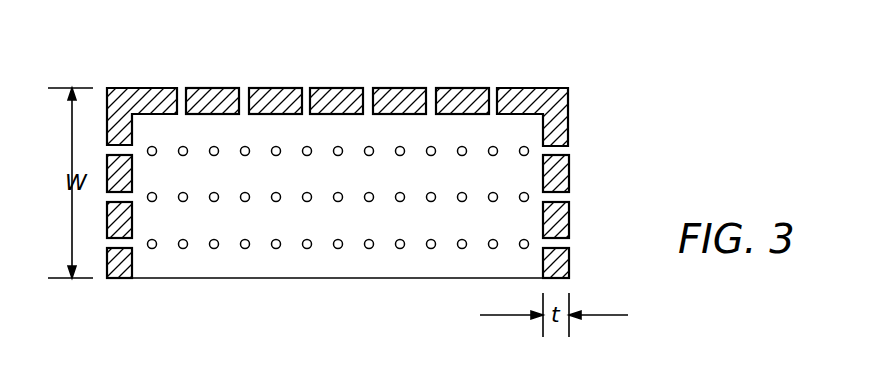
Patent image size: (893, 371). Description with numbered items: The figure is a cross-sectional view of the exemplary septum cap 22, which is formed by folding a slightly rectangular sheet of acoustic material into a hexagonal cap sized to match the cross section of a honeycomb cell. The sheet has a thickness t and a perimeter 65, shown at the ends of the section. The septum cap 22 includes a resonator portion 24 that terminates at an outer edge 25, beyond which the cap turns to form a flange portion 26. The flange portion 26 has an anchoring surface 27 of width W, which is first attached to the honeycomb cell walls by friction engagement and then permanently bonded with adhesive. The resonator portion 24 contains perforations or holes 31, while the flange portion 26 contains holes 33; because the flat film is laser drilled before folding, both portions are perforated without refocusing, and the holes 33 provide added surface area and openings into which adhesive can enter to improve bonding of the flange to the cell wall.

The septum cap 22 is at (520, 88).
The resonator portion 24 is at (222, 88).
The outer edge 25 is at (107, 88).
The flange portion 26 is at (558, 230).
The anchoring surface 27 is at (566, 180).
The perforations or holes 31 is at (307, 88).
The holes 33 is at (182, 249).
The perimeter 65 is at (118, 278).